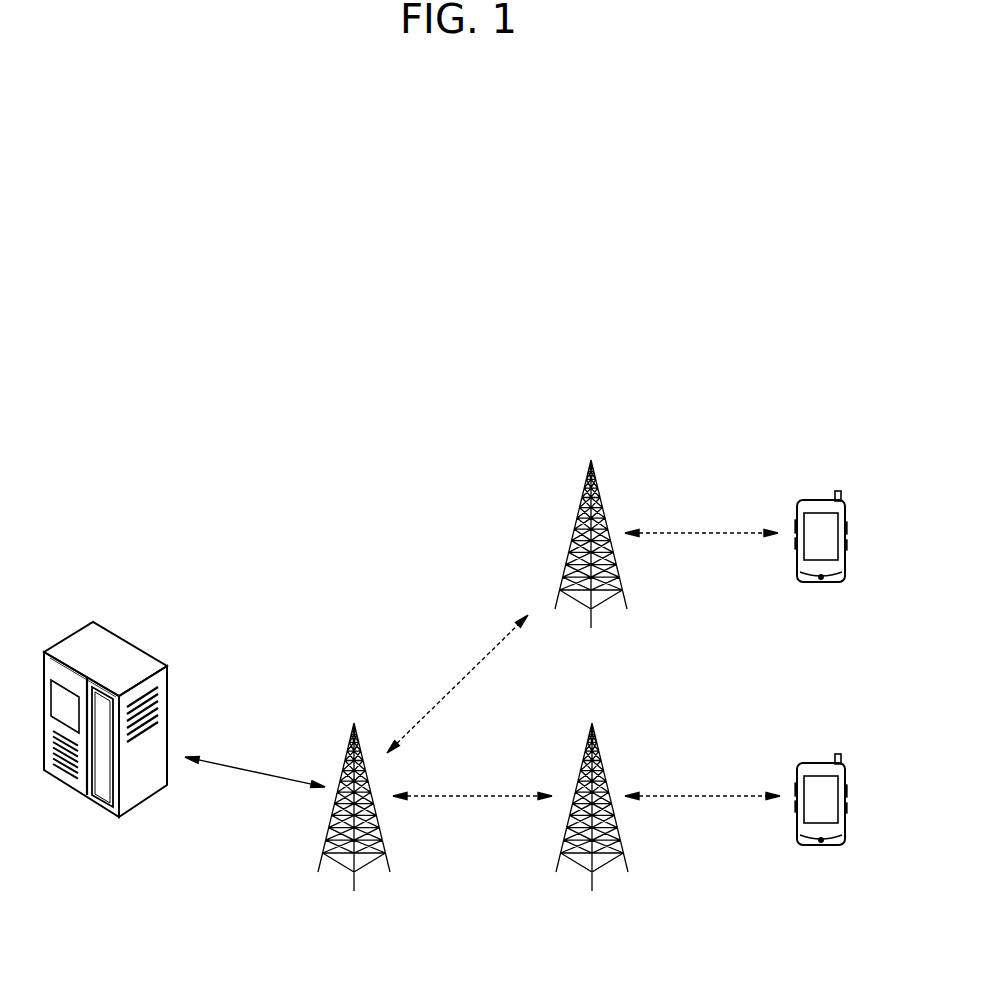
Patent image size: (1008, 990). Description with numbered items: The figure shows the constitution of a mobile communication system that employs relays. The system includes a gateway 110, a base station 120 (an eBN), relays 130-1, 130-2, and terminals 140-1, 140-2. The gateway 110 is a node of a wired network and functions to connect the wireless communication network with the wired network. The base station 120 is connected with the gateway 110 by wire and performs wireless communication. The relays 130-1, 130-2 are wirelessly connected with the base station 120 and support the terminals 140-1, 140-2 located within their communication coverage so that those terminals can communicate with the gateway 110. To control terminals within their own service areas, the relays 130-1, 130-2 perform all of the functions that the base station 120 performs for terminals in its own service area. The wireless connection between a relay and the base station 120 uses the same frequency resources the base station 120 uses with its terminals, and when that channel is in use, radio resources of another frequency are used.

The gateway 110 is at (98, 638).
The base station 120 is at (363, 863).
The relay 130-1 is at (602, 863).
The relay 130-2 is at (591, 460).
The terminal 140-1 is at (823, 843).
The terminal 140-2 is at (820, 505).